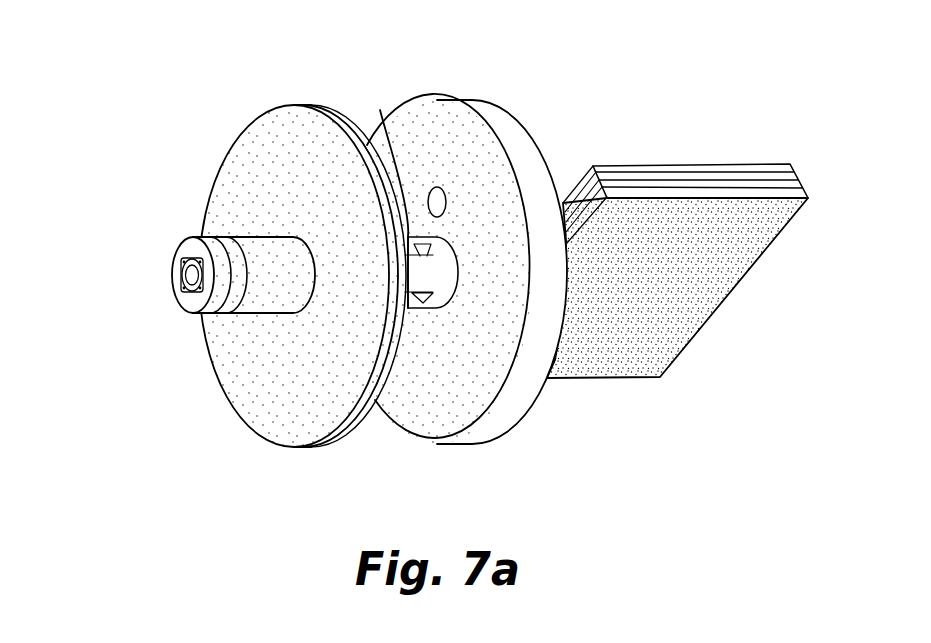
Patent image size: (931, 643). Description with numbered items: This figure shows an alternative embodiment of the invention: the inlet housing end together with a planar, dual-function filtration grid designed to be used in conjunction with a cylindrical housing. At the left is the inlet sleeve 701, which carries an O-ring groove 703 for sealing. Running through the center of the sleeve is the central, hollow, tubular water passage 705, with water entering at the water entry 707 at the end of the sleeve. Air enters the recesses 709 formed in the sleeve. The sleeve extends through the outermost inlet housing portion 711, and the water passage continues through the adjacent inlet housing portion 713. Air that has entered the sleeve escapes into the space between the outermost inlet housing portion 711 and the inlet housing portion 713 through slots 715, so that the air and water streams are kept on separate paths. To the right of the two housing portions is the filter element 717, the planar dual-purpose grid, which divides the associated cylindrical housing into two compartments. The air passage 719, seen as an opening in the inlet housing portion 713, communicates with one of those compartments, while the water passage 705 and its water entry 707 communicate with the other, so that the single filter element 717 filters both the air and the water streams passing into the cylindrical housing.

The inlet sleeve 701 is at (217, 305).
The O-ring groove 703 is at (230, 238).
The central hollow tubular water passage 705 is at (187, 252).
The water entry 707 is at (190, 276).
The recesses in the sleeve 709 is at (197, 242).
The outermost inlet housing portion 711 is at (295, 108).
The inlet housing portion 713 is at (497, 108).
The slots 715 is at (380, 110).
The filter element 717 is at (745, 173).
The air passage 719 is at (440, 197).